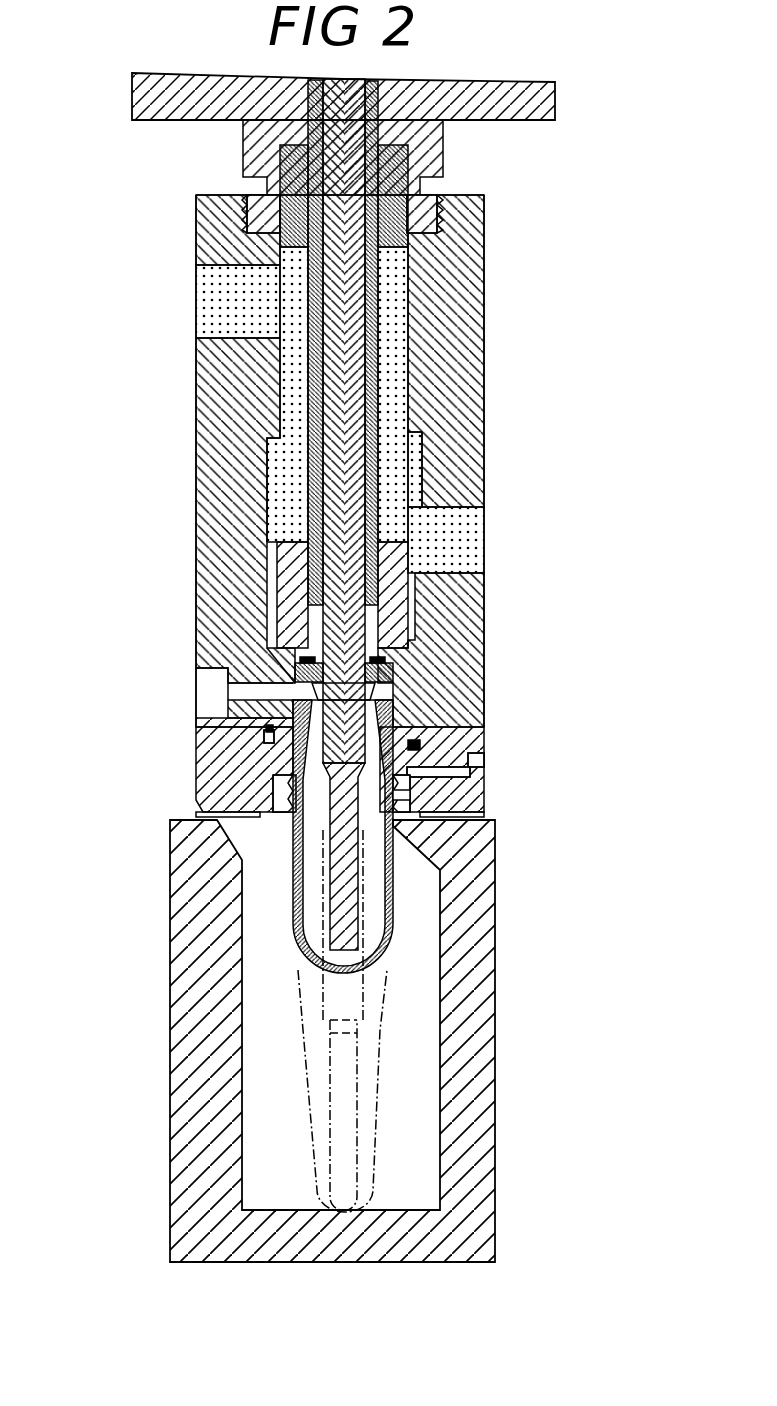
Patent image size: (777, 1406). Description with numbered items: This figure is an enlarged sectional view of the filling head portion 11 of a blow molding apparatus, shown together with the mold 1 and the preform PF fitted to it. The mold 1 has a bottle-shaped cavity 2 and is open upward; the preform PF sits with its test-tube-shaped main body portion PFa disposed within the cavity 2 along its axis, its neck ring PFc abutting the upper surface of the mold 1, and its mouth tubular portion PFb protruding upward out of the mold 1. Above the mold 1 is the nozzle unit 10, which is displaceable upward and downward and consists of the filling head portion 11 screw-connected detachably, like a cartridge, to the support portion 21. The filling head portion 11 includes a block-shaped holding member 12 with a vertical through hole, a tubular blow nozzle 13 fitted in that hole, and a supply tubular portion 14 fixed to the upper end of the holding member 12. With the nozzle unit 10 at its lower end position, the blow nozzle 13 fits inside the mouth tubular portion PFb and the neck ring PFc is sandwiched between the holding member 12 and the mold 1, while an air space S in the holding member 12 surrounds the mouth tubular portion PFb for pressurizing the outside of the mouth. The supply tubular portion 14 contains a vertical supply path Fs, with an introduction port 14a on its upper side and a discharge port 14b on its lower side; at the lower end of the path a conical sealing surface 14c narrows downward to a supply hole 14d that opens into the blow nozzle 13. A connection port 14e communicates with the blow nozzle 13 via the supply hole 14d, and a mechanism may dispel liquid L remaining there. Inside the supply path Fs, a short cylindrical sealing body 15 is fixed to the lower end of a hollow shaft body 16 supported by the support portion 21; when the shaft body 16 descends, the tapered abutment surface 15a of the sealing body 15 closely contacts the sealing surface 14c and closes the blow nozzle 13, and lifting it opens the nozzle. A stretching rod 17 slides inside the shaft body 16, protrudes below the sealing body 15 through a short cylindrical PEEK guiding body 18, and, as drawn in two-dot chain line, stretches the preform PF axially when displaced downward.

The mold 1 is at (470, 1143).
The cavity 2 is at (390, 1157).
The nozzle unit 10 is at (118, 378).
The filling head portion 11 is at (490, 400).
The holding member 12 is at (197, 802).
The blow nozzle 13 is at (230, 707).
The supply tubular portion 14 is at (220, 542).
The introduction port 14a is at (205, 308).
The discharge port 14b is at (478, 545).
The sealing surface 14c is at (378, 660).
The supply hole 14d is at (293, 673).
The connection port 14e is at (210, 708).
The sealing body 15 is at (290, 587).
The abutment surface 15a is at (393, 668).
The shaft body 16 is at (308, 90).
The stretching rod 17 is at (343, 122).
The guiding body 18 is at (323, 682).
The support portion 21 is at (128, 97).
The liquid L is at (395, 262).
The supply path Fs is at (396, 424).
The air space S is at (410, 795).
The preform PF is at (397, 910).
The main body portion PFa is at (393, 883).
The mouth tubular portion PFb is at (385, 825).
The neck ring PFc is at (293, 813).